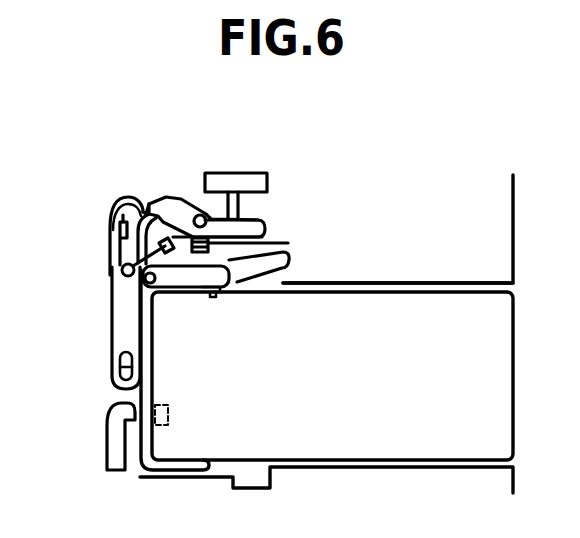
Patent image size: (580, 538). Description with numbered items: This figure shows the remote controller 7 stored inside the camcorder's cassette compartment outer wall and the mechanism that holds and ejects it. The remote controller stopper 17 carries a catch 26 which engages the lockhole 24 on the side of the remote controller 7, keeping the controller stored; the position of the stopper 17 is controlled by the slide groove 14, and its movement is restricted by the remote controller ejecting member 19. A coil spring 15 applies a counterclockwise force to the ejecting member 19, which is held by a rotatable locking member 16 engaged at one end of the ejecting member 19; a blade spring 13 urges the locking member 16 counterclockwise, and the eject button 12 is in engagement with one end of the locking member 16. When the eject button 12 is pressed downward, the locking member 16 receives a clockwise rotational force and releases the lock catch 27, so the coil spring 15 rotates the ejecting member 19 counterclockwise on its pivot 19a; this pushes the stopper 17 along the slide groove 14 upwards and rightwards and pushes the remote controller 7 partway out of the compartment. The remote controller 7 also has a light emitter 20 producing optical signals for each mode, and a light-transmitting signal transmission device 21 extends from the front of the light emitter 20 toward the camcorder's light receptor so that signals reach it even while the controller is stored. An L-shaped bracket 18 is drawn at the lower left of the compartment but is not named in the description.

The remote controller 7 is at (494, 382).
The eject button 12 is at (250, 180).
The blade spring 13 is at (262, 237).
The slide groove 14 is at (284, 261).
The coil spring 15 is at (120, 238).
The locking member 16 is at (173, 197).
The remote controller stopper 17 is at (281, 253).
The L-shaped bracket 18 is at (136, 466).
The remote controller ejecting member 19 is at (133, 197).
The pivot 19a is at (123, 273).
The light emitter 20 is at (160, 422).
The signal transmission device 21 is at (107, 433).
The lockhole 24 is at (214, 296).
The catch 26 is at (204, 289).
The lock catch 27 is at (137, 222).